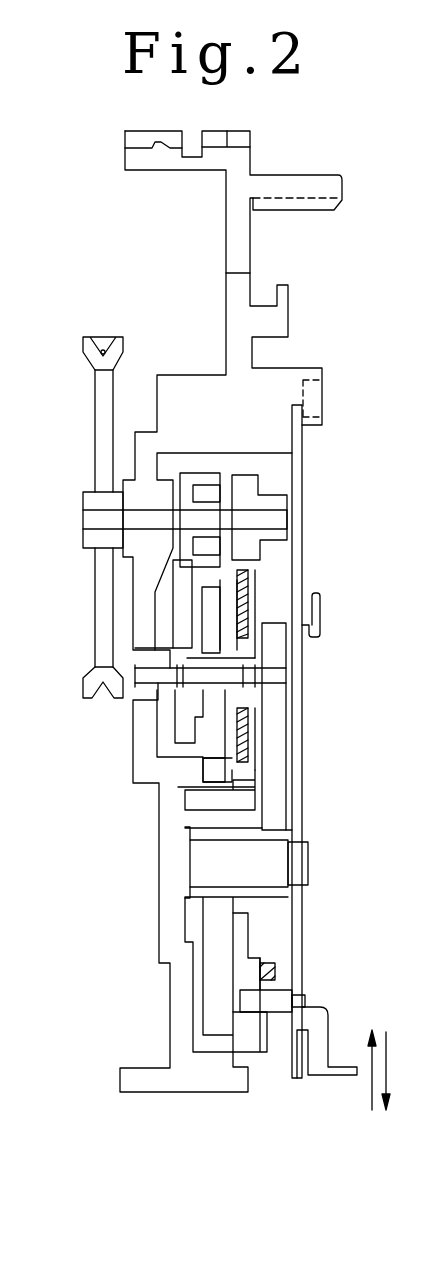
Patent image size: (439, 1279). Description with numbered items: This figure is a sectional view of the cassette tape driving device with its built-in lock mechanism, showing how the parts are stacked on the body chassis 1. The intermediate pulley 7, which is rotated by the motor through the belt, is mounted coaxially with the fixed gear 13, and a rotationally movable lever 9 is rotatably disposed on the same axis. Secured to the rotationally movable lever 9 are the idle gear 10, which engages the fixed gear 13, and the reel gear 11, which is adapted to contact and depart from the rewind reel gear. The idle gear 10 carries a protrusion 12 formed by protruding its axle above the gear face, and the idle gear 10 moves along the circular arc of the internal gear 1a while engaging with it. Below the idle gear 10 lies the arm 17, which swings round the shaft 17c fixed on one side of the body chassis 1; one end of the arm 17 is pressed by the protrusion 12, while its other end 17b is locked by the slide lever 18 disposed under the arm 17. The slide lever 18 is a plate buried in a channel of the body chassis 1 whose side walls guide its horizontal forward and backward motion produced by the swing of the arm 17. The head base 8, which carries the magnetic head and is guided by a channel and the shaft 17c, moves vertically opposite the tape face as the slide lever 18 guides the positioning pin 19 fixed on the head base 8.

The body chassis 1 is at (175, 908).
The internal gear 1a is at (213, 803).
The intermediate pulley 7 is at (105, 613).
The head base 8 is at (300, 948).
The rotationally movable lever 9 is at (165, 720).
The idle gear 10 is at (255, 570).
The reel gear 11 is at (215, 765).
The protrusion 12 is at (272, 675).
The fixed gear 13 is at (272, 502).
The arm 17 is at (275, 798).
The other end of the arm 17b is at (250, 1025).
The shaft 17c is at (272, 860).
The slide lever 18 is at (238, 930).
The positioning pin 19 is at (275, 998).